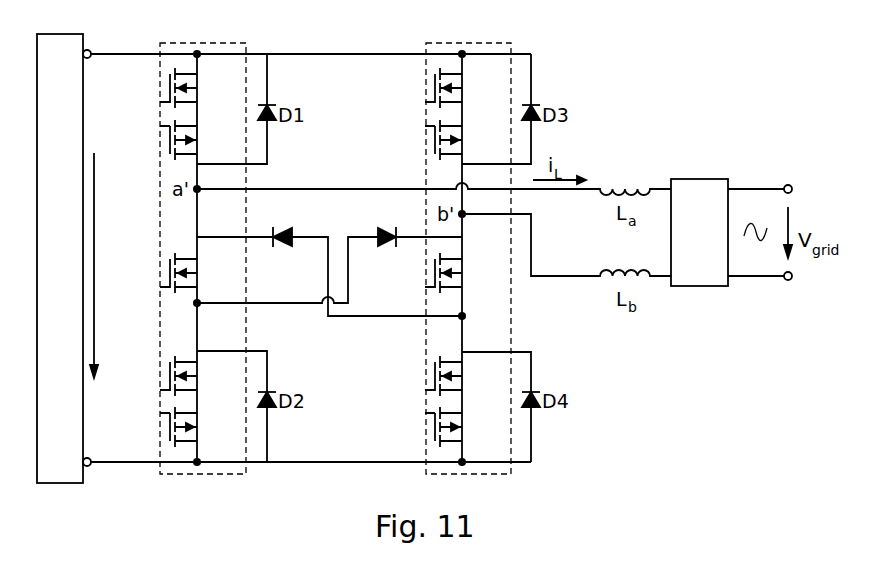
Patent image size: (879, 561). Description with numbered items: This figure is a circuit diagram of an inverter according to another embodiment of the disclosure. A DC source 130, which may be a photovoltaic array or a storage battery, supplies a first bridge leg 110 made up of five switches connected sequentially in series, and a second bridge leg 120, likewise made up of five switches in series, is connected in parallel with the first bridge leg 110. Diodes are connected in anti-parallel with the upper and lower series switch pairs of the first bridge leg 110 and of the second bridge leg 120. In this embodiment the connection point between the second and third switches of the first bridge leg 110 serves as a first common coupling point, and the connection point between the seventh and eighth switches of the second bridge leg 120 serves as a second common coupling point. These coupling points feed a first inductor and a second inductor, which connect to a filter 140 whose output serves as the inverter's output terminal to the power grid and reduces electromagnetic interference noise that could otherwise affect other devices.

The first bridge leg 110 is at (212, 43).
The second bridge leg 120 is at (477, 43).
The DC source 130 is at (74, 212).
The filter 140 is at (718, 244).